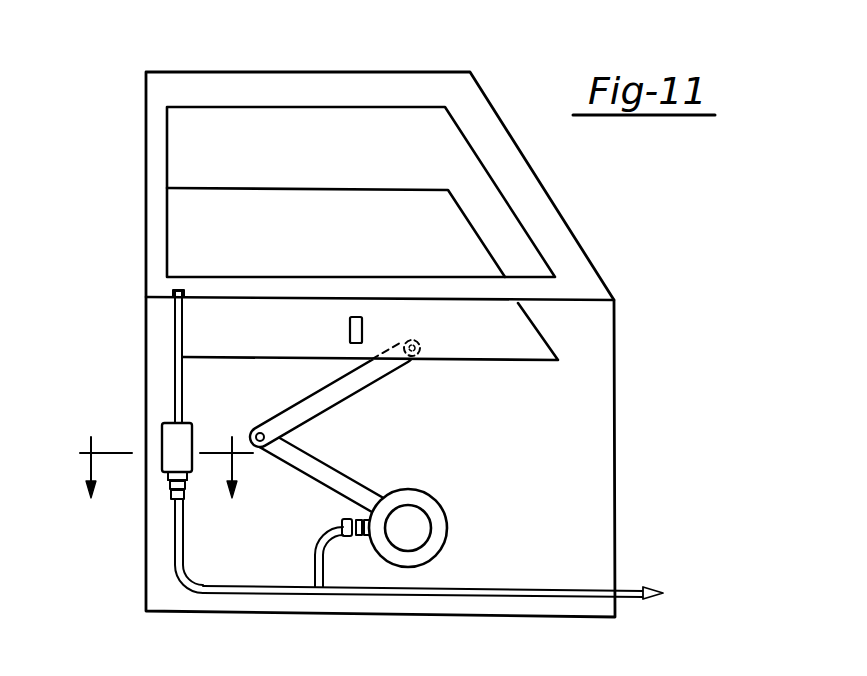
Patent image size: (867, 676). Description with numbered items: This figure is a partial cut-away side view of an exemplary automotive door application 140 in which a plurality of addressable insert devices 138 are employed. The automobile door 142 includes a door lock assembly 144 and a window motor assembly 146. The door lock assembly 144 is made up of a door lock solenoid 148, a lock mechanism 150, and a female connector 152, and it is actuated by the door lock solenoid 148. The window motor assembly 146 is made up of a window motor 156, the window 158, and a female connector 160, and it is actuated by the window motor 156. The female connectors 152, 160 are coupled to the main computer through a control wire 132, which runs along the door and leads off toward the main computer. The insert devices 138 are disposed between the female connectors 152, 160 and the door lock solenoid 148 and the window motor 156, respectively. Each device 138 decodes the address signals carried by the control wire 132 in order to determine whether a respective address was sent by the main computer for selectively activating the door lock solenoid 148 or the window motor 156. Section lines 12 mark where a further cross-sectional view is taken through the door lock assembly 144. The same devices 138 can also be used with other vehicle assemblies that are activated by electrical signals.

The section line 12- 12 is at (160, 486).
The control wire 132 is at (505, 598).
The addressable insert device 138 is at (168, 482).
The automotive door application 140 is at (110, 129).
The automobile door 142 is at (547, 222).
The door lock assembly 144 is at (131, 395).
The window motor assembly 146 is at (400, 444).
The door lock solenoid 148 is at (178, 443).
The lock mechanism 150 is at (173, 292).
The female connector 152 is at (180, 543).
The window motor 156 is at (430, 503).
The window 158 is at (286, 207).
The female connector 160 is at (350, 520).